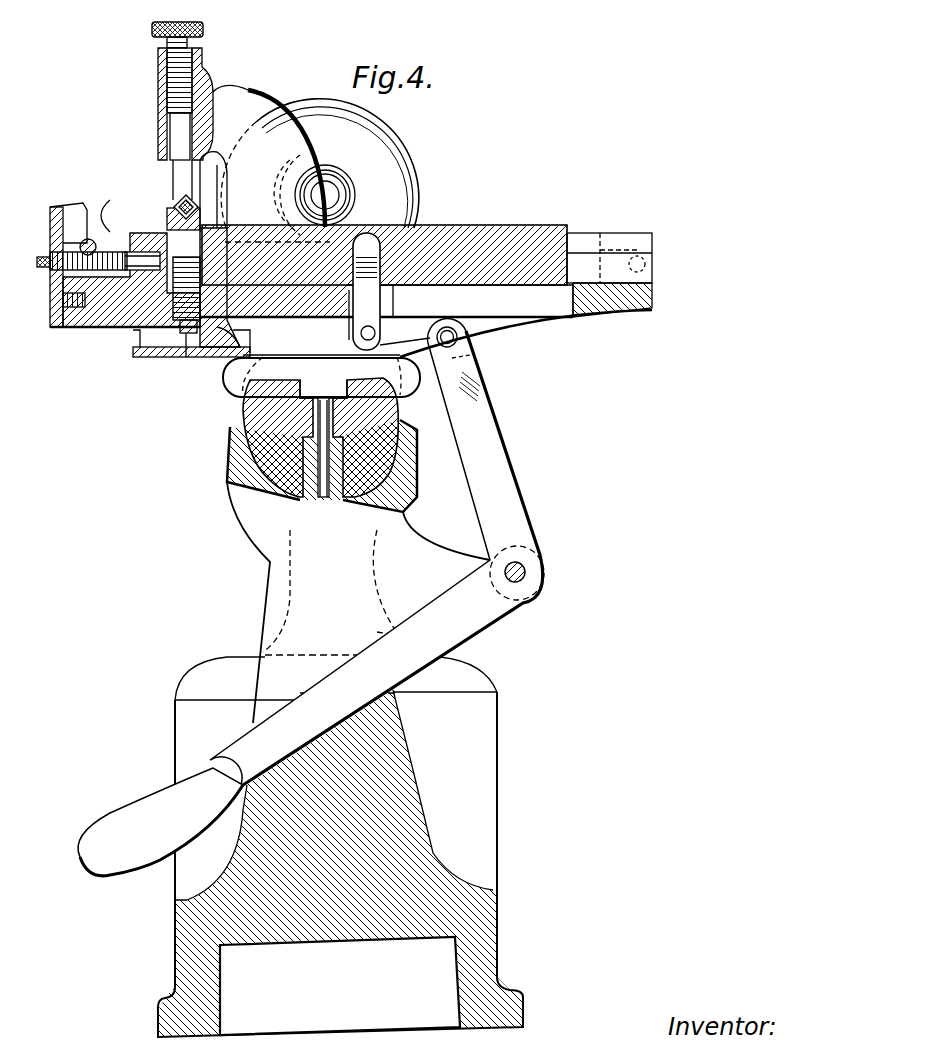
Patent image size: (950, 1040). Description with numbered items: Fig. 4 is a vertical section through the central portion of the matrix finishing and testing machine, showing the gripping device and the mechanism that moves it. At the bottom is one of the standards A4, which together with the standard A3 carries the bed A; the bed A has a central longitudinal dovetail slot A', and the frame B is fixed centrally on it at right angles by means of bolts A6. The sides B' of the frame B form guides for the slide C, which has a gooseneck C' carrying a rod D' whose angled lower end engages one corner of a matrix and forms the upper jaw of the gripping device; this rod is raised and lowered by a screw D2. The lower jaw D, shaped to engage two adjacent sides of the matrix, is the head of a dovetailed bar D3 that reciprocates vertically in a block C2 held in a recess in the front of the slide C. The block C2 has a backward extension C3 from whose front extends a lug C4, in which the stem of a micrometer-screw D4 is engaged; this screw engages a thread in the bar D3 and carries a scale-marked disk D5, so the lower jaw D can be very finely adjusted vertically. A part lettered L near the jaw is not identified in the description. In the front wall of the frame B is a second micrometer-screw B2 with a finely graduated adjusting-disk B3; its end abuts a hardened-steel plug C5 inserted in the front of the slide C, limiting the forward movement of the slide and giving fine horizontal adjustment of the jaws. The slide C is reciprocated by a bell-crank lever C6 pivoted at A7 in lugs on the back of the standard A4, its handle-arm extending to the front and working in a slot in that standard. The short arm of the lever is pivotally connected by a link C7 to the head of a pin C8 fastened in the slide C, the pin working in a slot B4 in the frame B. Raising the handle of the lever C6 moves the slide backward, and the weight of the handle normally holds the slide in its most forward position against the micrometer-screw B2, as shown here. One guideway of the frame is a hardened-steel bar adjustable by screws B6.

The bed A is at (296, 466).
The central longitudinal dovetail slot A' is at (303, 426).
The standard A3 is at (195, 682).
The standard A4 is at (490, 750).
The bolts A6 is at (290, 500).
The pivot A7 is at (530, 572).
The frame B is at (351, 298).
The sides of frame B' is at (628, 258).
The second micrometer-screw B2 is at (50, 262).
The adjusting-disk B3 is at (58, 240).
The slot B4 is at (460, 300).
The screws B6 is at (547, 226).
The slide C is at (386, 260).
The gooseneck C' is at (320, 154).
The block C2 is at (220, 248).
The backward extension C3 is at (242, 356).
The lug C4 is at (190, 358).
The hardened-steel plug C5 is at (111, 205).
The bell-crank lever C6 is at (470, 380).
The link C7 is at (420, 336).
The pin C8 is at (380, 300).
The lower jaw D is at (170, 217).
The rod D' is at (184, 124).
The screw D2 is at (205, 80).
The dovetailed bar D3 is at (215, 208).
The micrometer-screw D4 is at (150, 335).
The disk D5 is at (175, 345).
The lock L is at (174, 204).